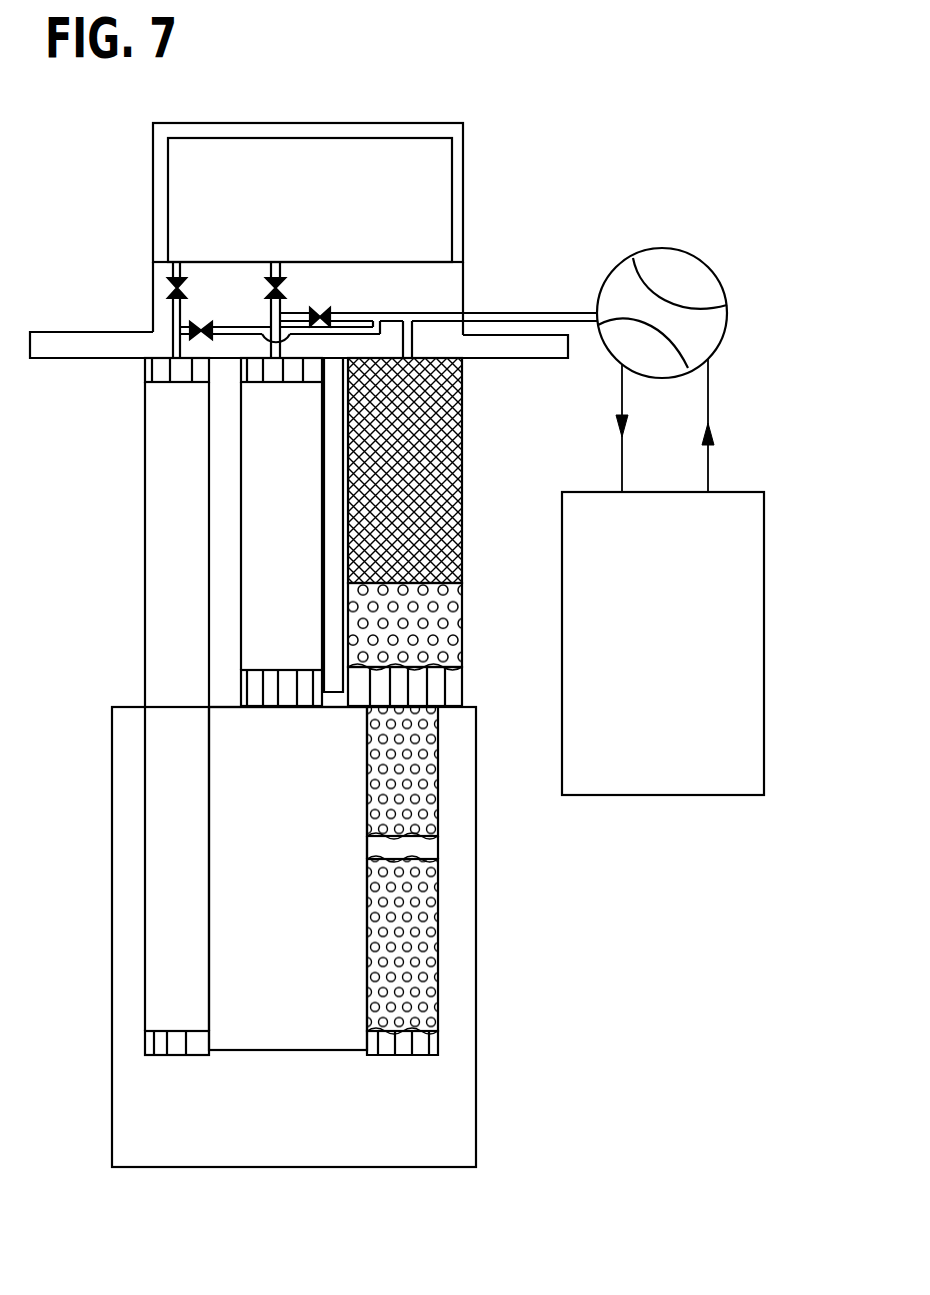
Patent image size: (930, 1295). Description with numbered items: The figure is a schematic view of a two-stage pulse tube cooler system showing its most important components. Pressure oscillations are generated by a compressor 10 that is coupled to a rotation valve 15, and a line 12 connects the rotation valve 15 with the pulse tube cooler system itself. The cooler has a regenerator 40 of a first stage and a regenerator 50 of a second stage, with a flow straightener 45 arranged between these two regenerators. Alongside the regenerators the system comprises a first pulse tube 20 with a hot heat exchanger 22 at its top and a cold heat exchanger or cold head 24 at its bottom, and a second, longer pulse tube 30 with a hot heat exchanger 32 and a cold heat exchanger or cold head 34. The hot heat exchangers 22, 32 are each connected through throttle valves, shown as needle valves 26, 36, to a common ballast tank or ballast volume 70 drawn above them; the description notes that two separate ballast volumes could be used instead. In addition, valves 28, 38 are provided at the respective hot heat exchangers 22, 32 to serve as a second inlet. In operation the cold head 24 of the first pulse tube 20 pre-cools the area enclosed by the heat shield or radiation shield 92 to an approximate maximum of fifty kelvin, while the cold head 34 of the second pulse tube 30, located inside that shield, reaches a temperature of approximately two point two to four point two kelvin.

The compressor 10 is at (643, 795).
The line 12 is at (492, 313).
The rotation valve 15 is at (728, 330).
The first pulse tube 20 is at (240, 507).
The hot heat exchanger 22 is at (287, 382).
The cold head 24 is at (284, 690).
The needle valve 26 is at (283, 290).
The valve 28 is at (321, 309).
The second pulse tube 30 is at (209, 874).
The hot heat exchanger 32 is at (150, 370).
The cold head 34 is at (192, 1048).
The needle valve 36 is at (172, 286).
The valve 38 is at (201, 323).
The regenerator of first stage 40 is at (463, 417).
The flow straightener 45 is at (463, 685).
The regenerator of second stage 50 is at (444, 904).
The ballast volume 70 is at (265, 165).
The radiation shield 92 is at (112, 1065).